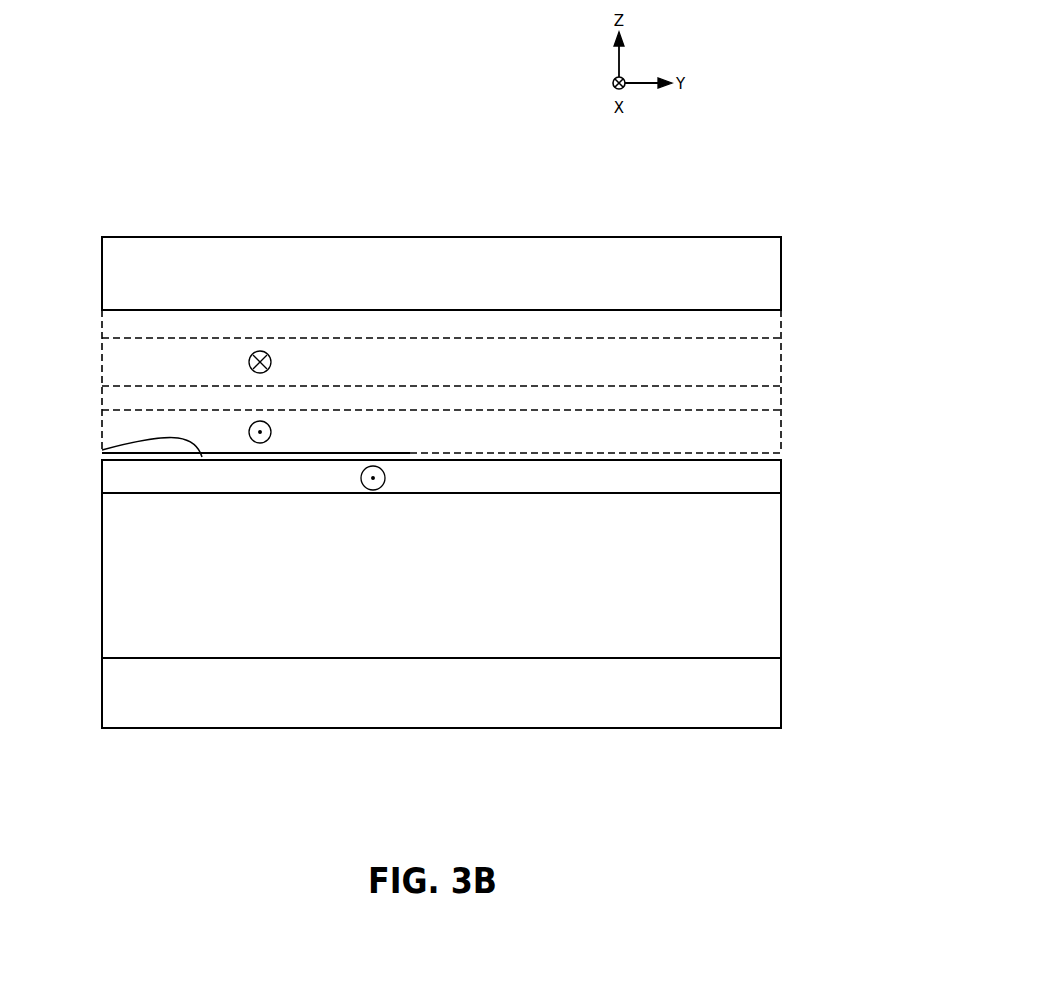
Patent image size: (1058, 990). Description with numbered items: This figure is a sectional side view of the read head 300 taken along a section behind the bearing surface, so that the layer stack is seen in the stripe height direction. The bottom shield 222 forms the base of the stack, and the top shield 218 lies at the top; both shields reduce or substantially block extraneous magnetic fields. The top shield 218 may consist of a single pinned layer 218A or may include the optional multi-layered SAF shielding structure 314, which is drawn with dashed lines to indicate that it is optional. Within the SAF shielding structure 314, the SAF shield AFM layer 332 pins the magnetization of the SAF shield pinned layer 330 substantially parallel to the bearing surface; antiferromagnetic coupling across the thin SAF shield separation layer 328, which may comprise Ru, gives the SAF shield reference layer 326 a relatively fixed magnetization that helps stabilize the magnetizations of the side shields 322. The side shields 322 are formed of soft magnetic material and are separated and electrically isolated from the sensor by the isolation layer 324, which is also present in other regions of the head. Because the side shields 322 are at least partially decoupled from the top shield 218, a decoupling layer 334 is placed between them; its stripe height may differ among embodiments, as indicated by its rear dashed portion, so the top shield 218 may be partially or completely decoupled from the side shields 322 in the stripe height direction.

The read head 300 is at (104, 158).
The top shield 218 is at (792, 332).
The single pinned layer 218A is at (575, 286).
The SAF shielding structure 314 is at (95, 311).
The SAF shield AFM layer 332 is at (567, 333).
The SAF shield pinned layer 330 is at (567, 368).
The SAF shield separation layer 328 is at (567, 406).
The SAF shield reference layer 326 is at (567, 438).
The decoupling layer 334 is at (102, 450).
The side shields 322 is at (458, 486).
The isolation layer 324 is at (125, 618).
The bottom shield 222 is at (565, 703).